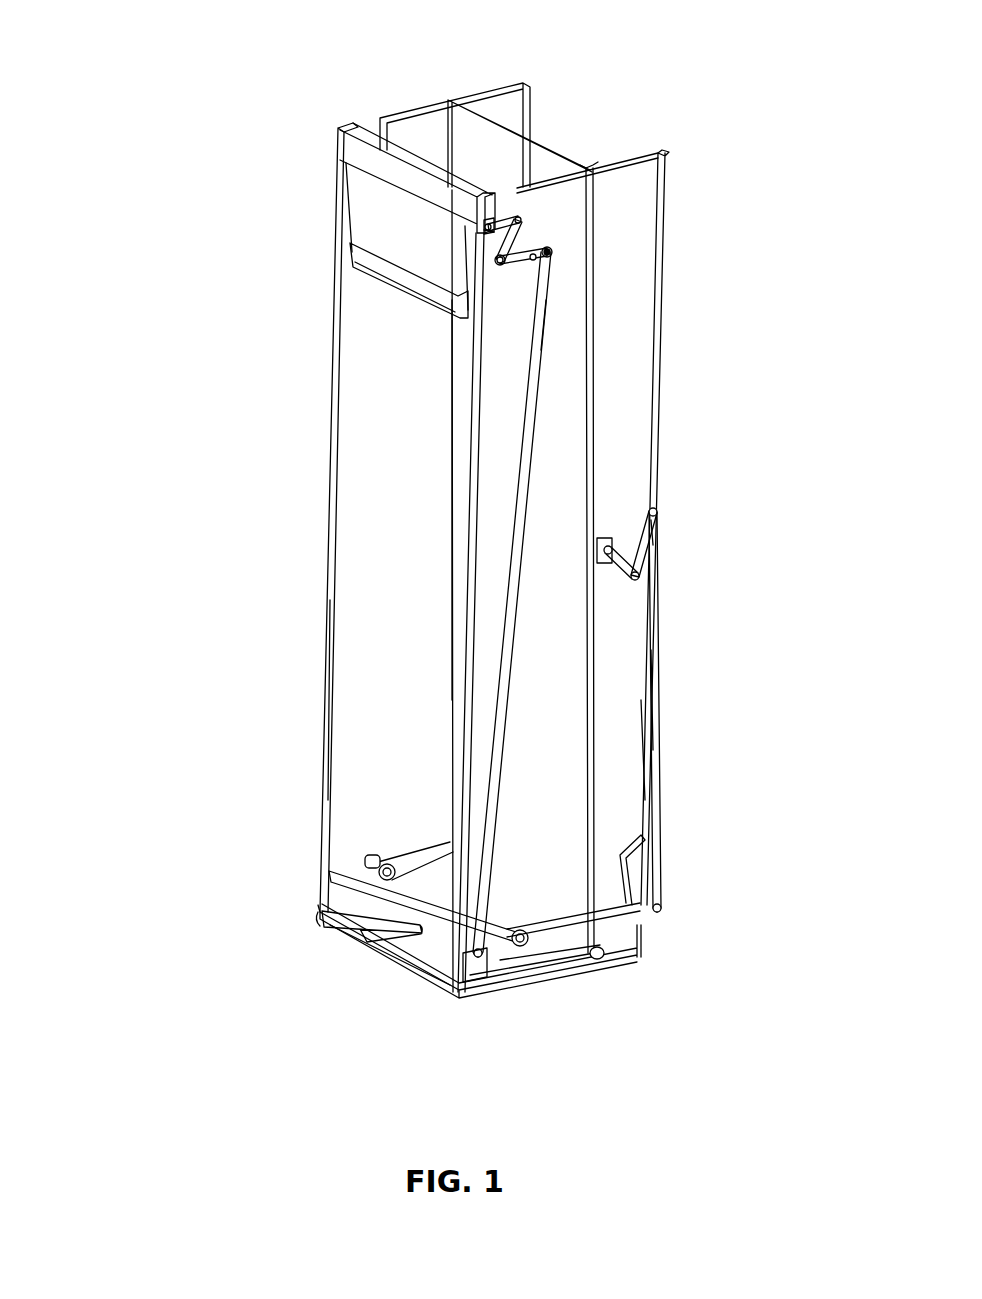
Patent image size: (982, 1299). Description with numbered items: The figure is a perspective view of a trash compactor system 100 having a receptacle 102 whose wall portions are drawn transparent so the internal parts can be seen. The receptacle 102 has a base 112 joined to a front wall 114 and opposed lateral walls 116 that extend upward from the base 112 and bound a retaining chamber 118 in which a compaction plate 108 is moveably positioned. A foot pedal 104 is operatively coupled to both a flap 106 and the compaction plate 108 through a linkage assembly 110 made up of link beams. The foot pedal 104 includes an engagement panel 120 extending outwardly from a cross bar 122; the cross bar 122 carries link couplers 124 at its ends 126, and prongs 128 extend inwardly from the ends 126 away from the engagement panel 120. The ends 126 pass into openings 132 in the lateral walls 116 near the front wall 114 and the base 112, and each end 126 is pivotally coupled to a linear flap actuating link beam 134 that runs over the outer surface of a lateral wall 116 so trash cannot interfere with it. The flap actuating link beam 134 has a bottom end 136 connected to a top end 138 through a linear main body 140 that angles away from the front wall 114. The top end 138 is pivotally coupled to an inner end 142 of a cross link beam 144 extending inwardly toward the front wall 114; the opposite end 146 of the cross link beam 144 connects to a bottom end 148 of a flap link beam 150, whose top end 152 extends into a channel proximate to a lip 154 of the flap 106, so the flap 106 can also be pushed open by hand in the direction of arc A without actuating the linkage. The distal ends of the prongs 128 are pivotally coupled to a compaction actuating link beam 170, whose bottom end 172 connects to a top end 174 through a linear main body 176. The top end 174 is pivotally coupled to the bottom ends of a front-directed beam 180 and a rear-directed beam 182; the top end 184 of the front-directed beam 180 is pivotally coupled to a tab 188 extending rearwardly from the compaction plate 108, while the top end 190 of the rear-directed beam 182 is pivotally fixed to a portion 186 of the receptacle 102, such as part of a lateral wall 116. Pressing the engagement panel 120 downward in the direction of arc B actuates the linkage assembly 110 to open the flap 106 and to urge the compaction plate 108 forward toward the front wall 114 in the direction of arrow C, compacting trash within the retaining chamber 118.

The trash compactor system 100 is at (150, 155).
The receptacle 102 is at (352, 410).
The foot pedal 104 is at (330, 878).
The flap 106 is at (370, 207).
The compaction plate 108 is at (486, 238).
The linkage assembly 110 is at (497, 668).
The base 112 is at (517, 967).
The front wall 114 is at (362, 752).
The lateral walls 116 is at (415, 109).
The retaining chamber 118 is at (453, 133).
The engagement panel 120 is at (335, 930).
The cross bar 122 is at (442, 920).
The link couplers 124 is at (492, 962).
The ends 126 is at (362, 859).
The prongs 128 is at (418, 842).
The openings 132 is at (343, 870).
The flap actuating link beam 134 is at (530, 462).
The bottom end 136 is at (510, 932).
The top end 138 is at (522, 258).
The main body 140 is at (530, 558).
The inner end 142 is at (505, 255).
The cross link beam 144 is at (545, 265).
The opposite end 146 is at (462, 302).
The bottom end 148 is at (487, 255).
The flap link beam 150 is at (520, 219).
The top end 152 is at (495, 226).
The lip 154 is at (500, 222).
The compaction actuating link beam 170 is at (650, 658).
The bottom end 172 is at (660, 884).
The top end 174 is at (640, 580).
The main body 176 is at (650, 690).
The front-directed beam 180 is at (617, 572).
The rear-directed beam 182 is at (655, 542).
The top end 184 is at (603, 563).
The portion 186 is at (657, 512).
The tab 188 is at (654, 505).
The top end 190 is at (657, 522).
The arc A is at (312, 247).
The arc B is at (150, 857).
The arrow C is at (445, 494).